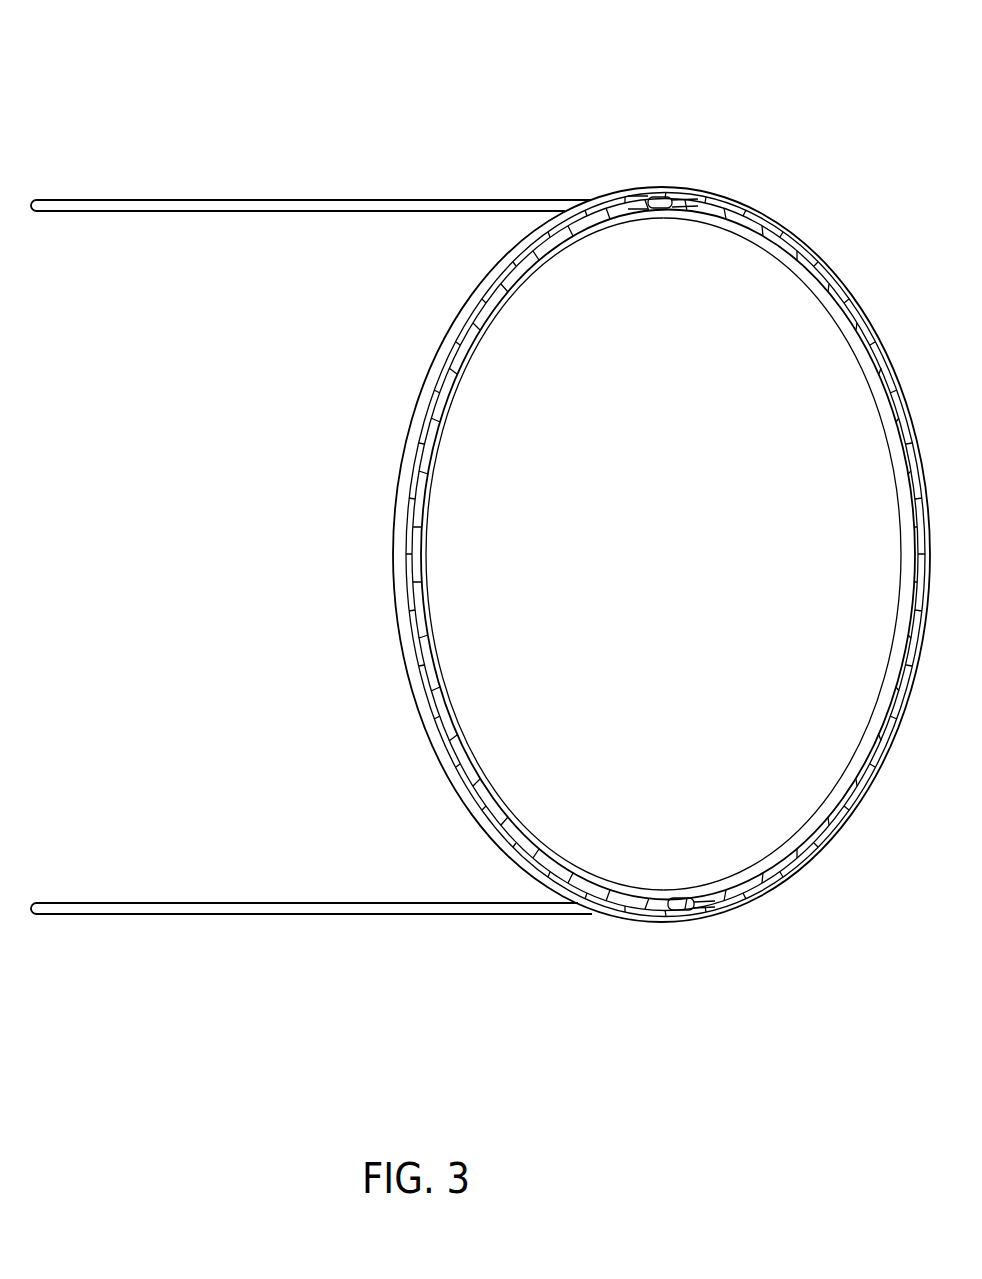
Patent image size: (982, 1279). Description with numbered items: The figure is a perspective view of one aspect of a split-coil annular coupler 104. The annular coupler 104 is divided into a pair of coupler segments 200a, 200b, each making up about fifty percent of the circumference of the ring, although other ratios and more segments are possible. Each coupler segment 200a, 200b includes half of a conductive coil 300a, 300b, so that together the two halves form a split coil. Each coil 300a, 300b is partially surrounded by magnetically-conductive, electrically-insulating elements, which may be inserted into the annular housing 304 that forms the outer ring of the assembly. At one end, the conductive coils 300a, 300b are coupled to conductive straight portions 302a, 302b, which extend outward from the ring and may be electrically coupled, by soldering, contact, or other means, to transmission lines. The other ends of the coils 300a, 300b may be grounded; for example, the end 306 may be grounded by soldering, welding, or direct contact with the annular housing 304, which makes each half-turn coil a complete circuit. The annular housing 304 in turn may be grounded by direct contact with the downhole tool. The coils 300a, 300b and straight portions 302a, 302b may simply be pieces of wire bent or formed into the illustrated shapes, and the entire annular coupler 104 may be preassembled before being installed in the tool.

The split-coil annular coupler 104 is at (754, 62).
The coupler segment 200a is at (442, 540).
The coupler segment 200b is at (868, 537).
The conductive coil 300a is at (427, 623).
The conductive coil 300b is at (922, 596).
The conductive straight portion 302a is at (158, 903).
The conductive straight portion 302b is at (158, 200).
The annular housing 304 is at (397, 536).
The end 306 is at (686, 905).